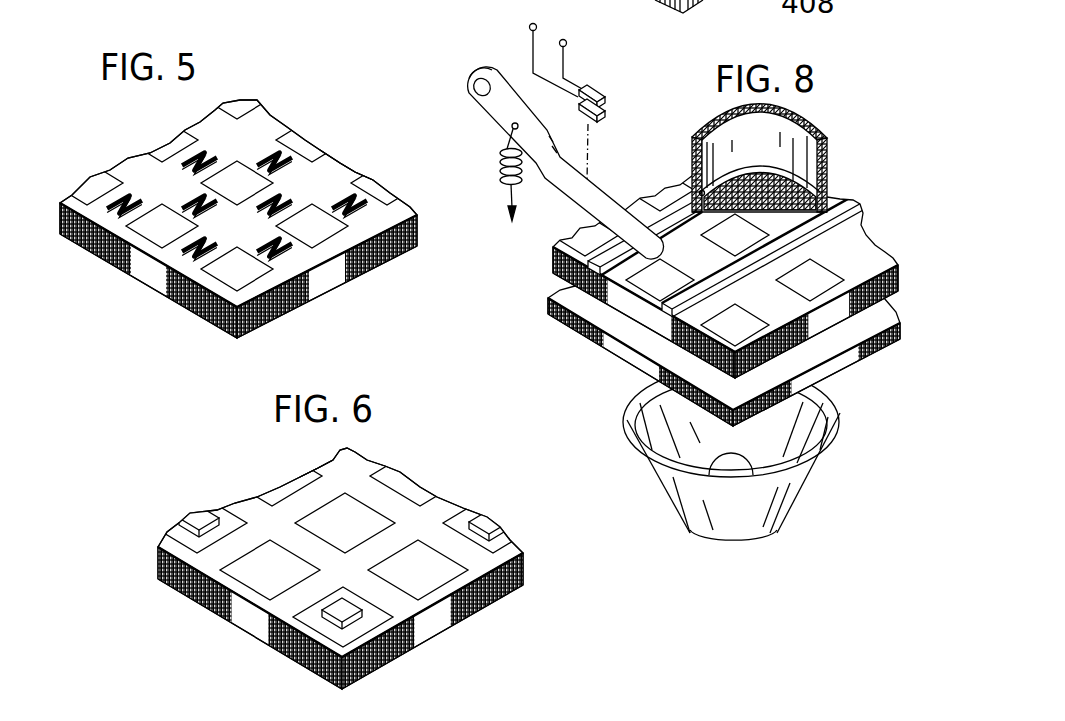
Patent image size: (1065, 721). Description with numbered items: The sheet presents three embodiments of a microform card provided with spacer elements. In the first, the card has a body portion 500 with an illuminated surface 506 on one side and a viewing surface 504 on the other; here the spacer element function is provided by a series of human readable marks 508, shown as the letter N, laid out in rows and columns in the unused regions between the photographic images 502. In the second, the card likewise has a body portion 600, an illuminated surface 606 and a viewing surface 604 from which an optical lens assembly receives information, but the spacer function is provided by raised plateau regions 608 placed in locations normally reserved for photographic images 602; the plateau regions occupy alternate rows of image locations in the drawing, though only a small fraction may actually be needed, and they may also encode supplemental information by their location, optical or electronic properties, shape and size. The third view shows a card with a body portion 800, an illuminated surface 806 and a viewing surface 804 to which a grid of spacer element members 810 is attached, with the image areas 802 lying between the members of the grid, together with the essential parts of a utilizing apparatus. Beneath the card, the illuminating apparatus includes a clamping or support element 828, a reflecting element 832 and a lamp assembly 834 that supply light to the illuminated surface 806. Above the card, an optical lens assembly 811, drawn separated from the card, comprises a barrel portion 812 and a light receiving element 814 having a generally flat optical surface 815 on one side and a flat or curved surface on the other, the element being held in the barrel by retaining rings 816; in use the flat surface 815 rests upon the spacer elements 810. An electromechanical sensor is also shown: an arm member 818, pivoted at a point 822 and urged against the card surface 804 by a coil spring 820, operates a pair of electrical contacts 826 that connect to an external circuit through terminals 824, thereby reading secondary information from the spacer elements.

In FIG. 5, the body portion 500 is at (233, 218).
In FIG. 5, the photographic images 502 is at (293, 140).
In FIG. 5, the viewing surface 504 is at (328, 173).
In FIG. 5, the illuminated surface 506 is at (187, 312).
In FIG. 5, the human readable marks 508 is at (288, 258).
In FIG. 6, the body portion 600 is at (344, 559).
In FIG. 6, the photographic images 602 is at (390, 483).
In FIG. 6, the viewing surface 604 is at (330, 470).
In FIG. 6, the illuminated surface 606 is at (227, 617).
In FIG. 6, the plateau regions 608 is at (487, 527).
In FIG. 8, the body portion 800 is at (633, 310).
In FIG. 8, the electrode 802 is at (653, 282).
In FIG. 8, the viewing surface 804 is at (702, 273).
In FIG. 8, the illuminated surface 806 is at (707, 356).
In FIG. 8, the spacer element members 810 is at (612, 252).
In FIG. 8, the optical lens assembly 811 is at (809, 152).
In FIG. 8, the barrel portion 812 is at (828, 143).
In FIG. 8, the light receiving element 814 is at (762, 181).
In FIG. 8, the flat optical surface 815 is at (835, 211).
In FIG. 8, the retaining rings 816 is at (818, 206).
In FIG. 8, the arm member 818 is at (538, 148).
In FIG. 8, the coil spring 820 is at (505, 163).
In FIG. 8, the pivot point 822 is at (478, 78).
In FIG. 8, the terminals 824 is at (537, 27).
In FIG. 8, the electrical contacts 826 is at (606, 99).
In FIG. 8, the clamping or support element 828 is at (647, 330).
In FIG. 8, the reflecting element 832 is at (699, 475).
In FIG. 8, the lamp assembly 834 is at (727, 465).